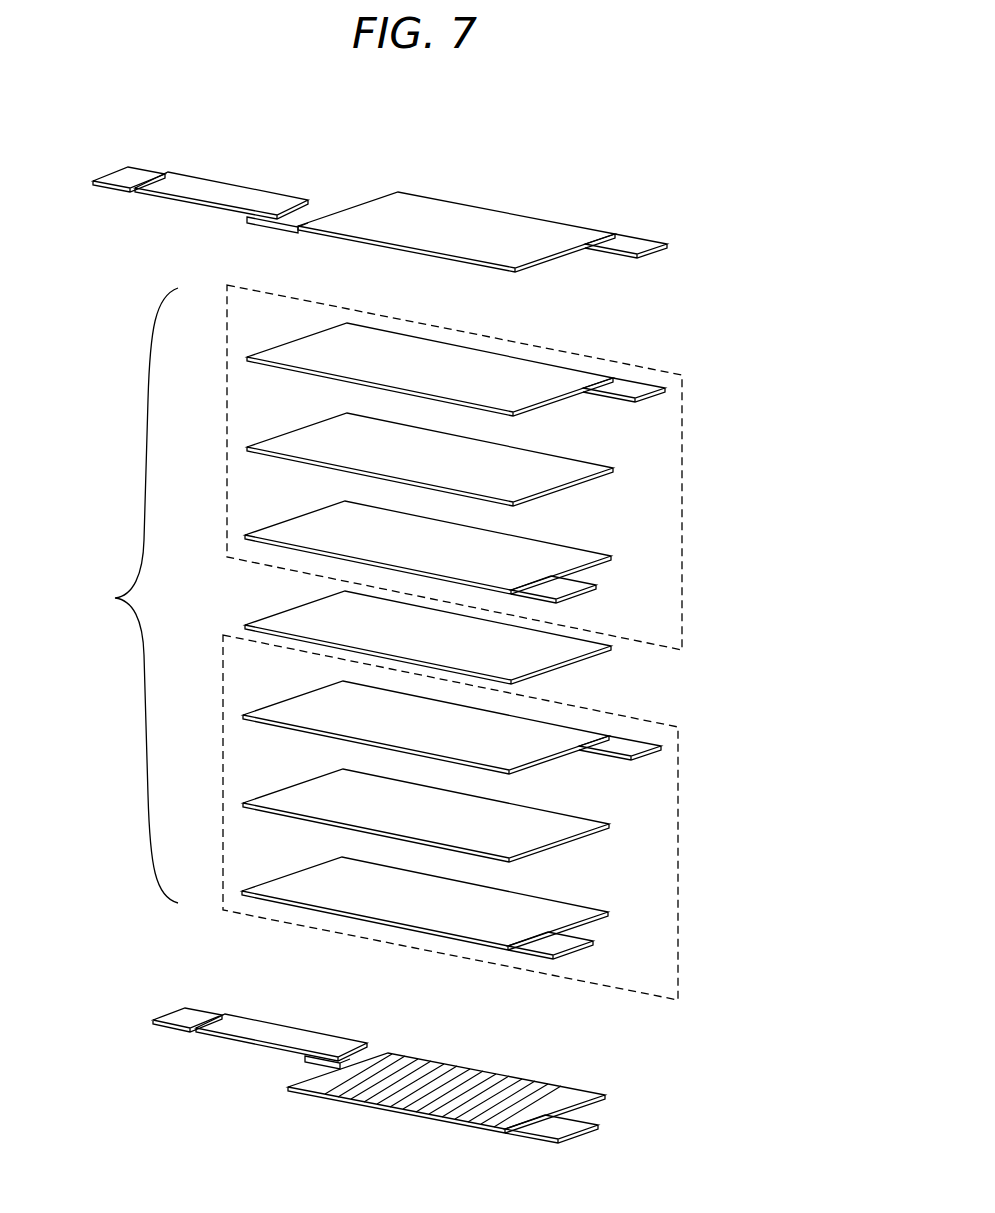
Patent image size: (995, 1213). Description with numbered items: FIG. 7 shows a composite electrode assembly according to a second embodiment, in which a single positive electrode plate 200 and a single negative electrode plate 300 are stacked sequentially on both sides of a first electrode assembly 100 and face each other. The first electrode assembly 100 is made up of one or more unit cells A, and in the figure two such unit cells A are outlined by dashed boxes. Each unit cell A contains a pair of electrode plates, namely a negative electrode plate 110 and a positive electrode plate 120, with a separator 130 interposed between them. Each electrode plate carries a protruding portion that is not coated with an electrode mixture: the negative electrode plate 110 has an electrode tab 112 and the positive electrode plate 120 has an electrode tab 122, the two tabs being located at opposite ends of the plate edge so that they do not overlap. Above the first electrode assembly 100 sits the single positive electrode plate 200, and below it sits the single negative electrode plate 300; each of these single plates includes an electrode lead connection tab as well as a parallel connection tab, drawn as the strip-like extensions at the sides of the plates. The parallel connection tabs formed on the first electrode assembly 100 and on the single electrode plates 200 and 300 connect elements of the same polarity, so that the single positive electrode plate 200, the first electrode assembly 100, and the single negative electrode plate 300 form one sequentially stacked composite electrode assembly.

The first electrode assembly 100 is at (407, 642).
The negative electrode plate 110 is at (522, 393).
The electrode tab 112 is at (629, 384).
The positive electrode plate 120 is at (555, 547).
The electrode tab 122 is at (570, 588).
The separator 130 is at (528, 465).
The single positive electrode plate 200 is at (427, 190).
The single negative electrode plate 300 is at (390, 1117).
The unit cell A is at (226, 418).